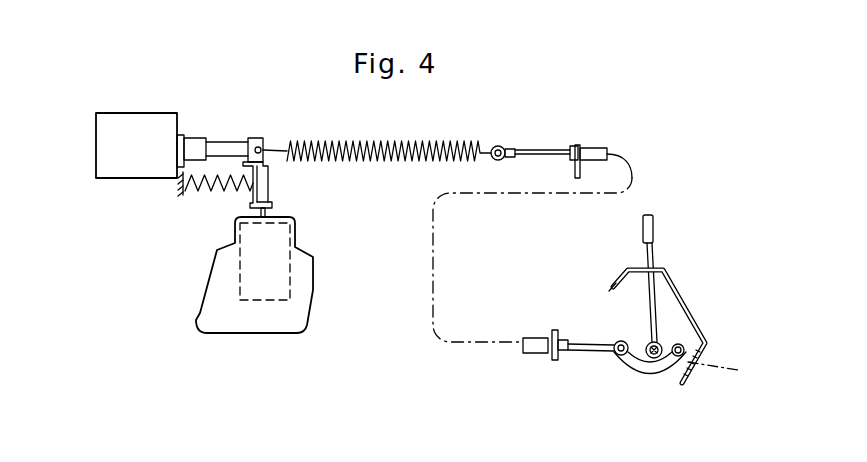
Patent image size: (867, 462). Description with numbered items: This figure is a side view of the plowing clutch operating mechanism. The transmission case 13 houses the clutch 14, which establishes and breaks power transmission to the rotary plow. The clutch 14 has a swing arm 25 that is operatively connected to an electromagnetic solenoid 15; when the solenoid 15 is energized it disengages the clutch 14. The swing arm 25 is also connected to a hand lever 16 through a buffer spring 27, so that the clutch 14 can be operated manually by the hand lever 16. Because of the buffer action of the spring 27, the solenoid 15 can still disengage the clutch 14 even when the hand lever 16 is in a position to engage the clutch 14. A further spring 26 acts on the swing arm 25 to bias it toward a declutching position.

The transmission case 13 is at (203, 303).
The clutch 14 is at (259, 300).
The electromagnetic solenoid 15 is at (125, 178).
The hand lever 16 is at (655, 232).
The swing arm 25 is at (270, 183).
The spring 26 is at (222, 192).
The buffer spring 27 is at (403, 163).